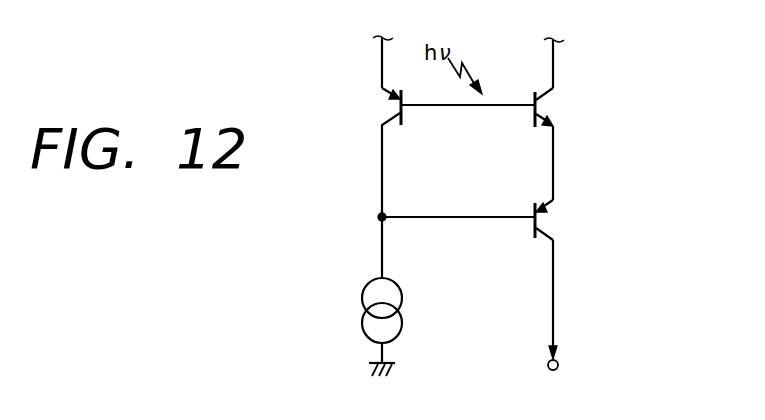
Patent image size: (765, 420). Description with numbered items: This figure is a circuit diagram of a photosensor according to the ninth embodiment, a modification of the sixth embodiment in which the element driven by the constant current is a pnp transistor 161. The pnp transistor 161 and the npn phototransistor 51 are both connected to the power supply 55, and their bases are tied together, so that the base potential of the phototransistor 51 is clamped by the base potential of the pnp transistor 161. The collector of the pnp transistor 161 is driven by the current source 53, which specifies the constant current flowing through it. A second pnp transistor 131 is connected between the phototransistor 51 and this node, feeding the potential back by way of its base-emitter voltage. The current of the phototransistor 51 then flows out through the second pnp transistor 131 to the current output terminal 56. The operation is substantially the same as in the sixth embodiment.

The power supply 55 is at (372, 33).
The pnp transistor Q3 161 is at (380, 96).
The npn phototransistor Q1 51 is at (562, 96).
The pnp transistor Q2 131 is at (558, 210).
The current source 53 is at (370, 282).
The current output terminal 56 is at (559, 364).